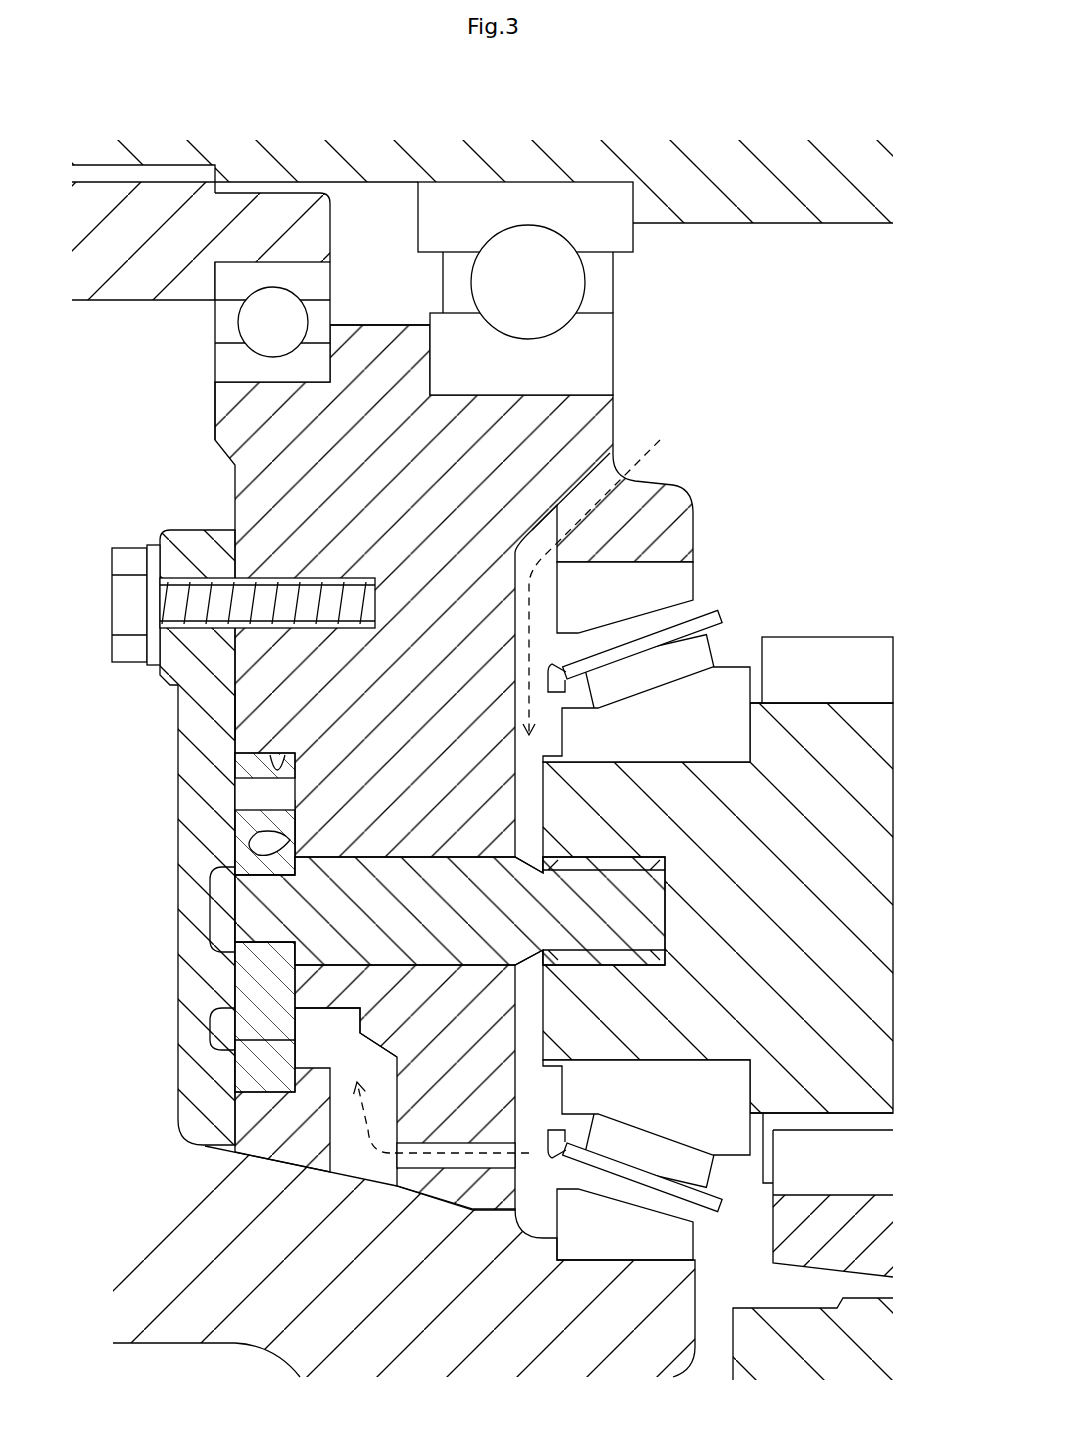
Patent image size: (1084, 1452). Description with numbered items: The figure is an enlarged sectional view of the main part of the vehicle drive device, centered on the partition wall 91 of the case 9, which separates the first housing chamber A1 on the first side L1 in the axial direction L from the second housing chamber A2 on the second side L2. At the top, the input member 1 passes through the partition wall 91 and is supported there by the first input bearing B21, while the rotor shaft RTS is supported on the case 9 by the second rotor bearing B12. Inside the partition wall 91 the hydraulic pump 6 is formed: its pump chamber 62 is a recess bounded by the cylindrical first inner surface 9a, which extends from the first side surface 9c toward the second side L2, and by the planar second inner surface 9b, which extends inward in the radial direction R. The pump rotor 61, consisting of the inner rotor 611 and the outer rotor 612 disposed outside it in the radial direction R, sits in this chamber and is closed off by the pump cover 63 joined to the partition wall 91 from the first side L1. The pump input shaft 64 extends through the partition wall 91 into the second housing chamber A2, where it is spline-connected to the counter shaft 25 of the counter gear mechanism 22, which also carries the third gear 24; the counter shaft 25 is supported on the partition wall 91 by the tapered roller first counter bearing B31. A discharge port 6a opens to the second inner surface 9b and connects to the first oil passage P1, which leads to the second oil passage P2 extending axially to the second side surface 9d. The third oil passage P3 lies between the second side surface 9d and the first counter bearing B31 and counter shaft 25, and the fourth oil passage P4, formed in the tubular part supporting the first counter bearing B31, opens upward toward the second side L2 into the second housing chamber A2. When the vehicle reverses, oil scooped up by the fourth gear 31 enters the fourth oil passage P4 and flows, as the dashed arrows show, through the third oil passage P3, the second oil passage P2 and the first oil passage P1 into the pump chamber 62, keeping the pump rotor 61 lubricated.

The input member 1 is at (786, 203).
The first housing chamber A1 is at (105, 390).
The second housing chamber A2 is at (778, 352).
The rotor shaft RTS is at (160, 281).
The partition wall 91 is at (238, 413).
The case 9 is at (478, 767).
The second rotor bearing B12 is at (273, 322).
The first input bearing B21 is at (590, 358).
The first counter bearing B31 is at (668, 585).
The fourth oil passage P4 is at (660, 440).
The first oil passage P1 is at (365, 1150).
The second oil passage P2 is at (450, 1168).
The third oil passage P3 is at (531, 1177).
The radial direction R is at (918, 348).
The axial direction L is at (602, 89).
The first side in the axial direction L1 is at (370, 92).
The second side in the axial direction L2 is at (623, 92).
The counter gear mechanism 22 is at (821, 606).
The third gear 24 is at (857, 668).
The counter shaft 25 is at (795, 728).
The first inner surface 9a is at (292, 752).
The second inner surface 9b is at (258, 832).
The first side surface 9c is at (233, 715).
The second side surface 9d is at (519, 817).
The pump rotor 61 is at (181, 811).
The inner rotor 611 is at (258, 848).
The outer rotor 612 is at (262, 767).
The pump input shaft 64 is at (255, 912).
The hydraulic pump 6 is at (262, 837).
The pump cover 63 is at (193, 1045).
The pump chamber 62 is at (312, 1037).
The discharge port 6a is at (337, 1052).
The fourth gear 31 is at (820, 1163).